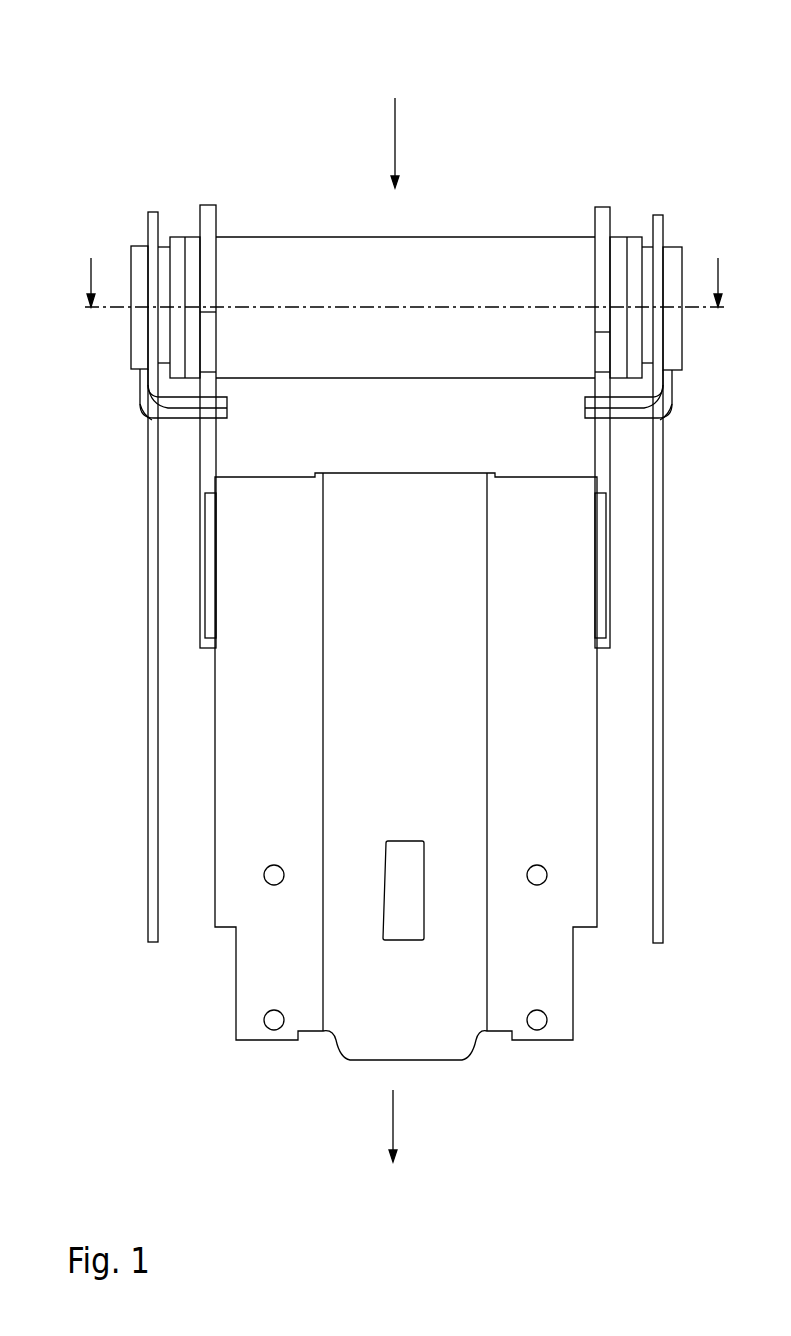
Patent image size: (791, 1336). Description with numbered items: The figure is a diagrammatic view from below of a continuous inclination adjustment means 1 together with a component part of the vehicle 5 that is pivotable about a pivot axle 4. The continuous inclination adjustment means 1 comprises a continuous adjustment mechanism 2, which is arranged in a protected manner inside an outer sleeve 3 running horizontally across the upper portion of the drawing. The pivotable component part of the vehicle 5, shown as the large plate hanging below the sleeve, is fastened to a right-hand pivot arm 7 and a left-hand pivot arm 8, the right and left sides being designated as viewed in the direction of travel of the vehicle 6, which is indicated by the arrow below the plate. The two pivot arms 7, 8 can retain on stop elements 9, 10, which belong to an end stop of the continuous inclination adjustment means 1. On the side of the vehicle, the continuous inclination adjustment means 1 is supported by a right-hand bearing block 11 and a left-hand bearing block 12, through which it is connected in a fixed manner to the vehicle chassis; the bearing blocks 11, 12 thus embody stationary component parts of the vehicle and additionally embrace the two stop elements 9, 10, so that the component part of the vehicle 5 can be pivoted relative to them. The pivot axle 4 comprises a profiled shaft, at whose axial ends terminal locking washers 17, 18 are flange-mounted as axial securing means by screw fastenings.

The continuous inclination adjustment means 1 is at (405, 581).
The continuous adjustment mechanism 2 is at (394, 132).
The outer sleeve 3 is at (493, 237).
The pivot axle 4 is at (284, 300).
The component part of the vehicle 5 is at (573, 1010).
The direction of travel of the vehicle 6 is at (393, 1120).
The right-hand pivot arm 7 is at (603, 480).
The left-hand pivot arm 8 is at (207, 480).
The stop element 9 is at (628, 413).
The stop element 10 is at (183, 413).
The right-hand bearing block 11 is at (663, 703).
The left-hand bearing block 12 is at (148, 683).
The terminal locking washer 17 is at (137, 246).
The terminal locking washer 18 is at (672, 250).